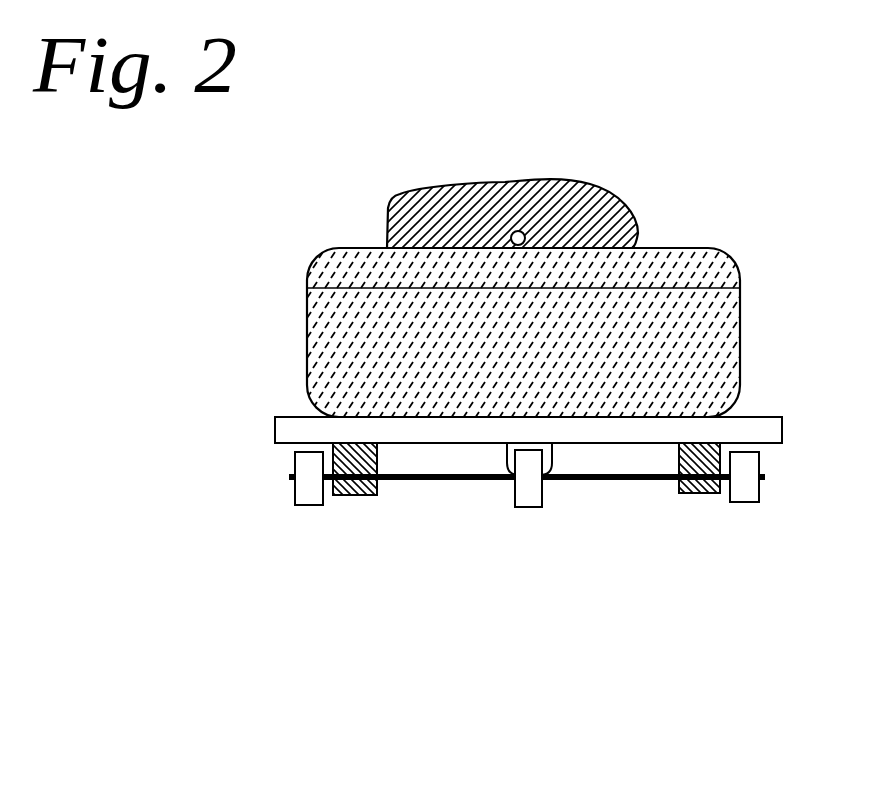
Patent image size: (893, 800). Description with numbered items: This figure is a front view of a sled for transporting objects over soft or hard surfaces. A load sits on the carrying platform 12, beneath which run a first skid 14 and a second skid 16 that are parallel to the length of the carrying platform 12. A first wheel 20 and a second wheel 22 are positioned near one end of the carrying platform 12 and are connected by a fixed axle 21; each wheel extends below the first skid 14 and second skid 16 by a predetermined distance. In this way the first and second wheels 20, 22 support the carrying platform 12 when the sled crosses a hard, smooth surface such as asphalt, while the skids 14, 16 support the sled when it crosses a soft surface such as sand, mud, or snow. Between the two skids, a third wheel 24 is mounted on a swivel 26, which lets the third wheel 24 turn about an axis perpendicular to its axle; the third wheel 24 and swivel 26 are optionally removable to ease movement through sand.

The carrying platform 12 is at (275, 430).
The first skid 14 is at (698, 495).
The second skid 16 is at (355, 497).
The first wheel 20 is at (745, 497).
The fixed axle 21 is at (617, 482).
The second wheel 22 is at (309, 497).
The third wheel 24 is at (529, 498).
The swivel 26 is at (507, 453).